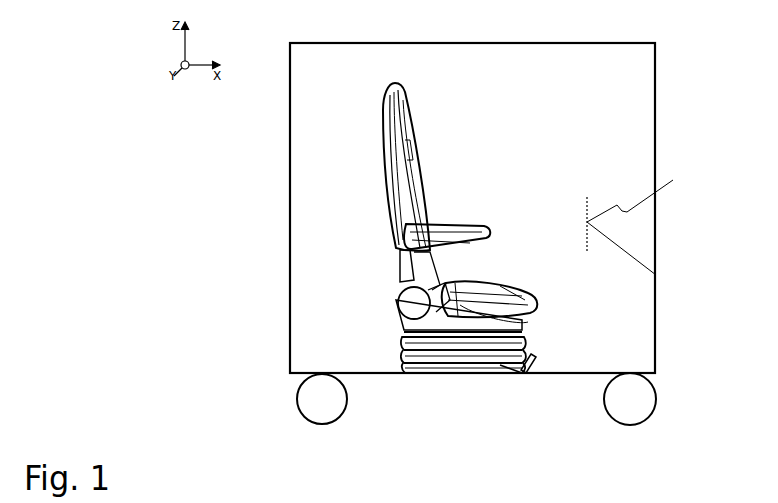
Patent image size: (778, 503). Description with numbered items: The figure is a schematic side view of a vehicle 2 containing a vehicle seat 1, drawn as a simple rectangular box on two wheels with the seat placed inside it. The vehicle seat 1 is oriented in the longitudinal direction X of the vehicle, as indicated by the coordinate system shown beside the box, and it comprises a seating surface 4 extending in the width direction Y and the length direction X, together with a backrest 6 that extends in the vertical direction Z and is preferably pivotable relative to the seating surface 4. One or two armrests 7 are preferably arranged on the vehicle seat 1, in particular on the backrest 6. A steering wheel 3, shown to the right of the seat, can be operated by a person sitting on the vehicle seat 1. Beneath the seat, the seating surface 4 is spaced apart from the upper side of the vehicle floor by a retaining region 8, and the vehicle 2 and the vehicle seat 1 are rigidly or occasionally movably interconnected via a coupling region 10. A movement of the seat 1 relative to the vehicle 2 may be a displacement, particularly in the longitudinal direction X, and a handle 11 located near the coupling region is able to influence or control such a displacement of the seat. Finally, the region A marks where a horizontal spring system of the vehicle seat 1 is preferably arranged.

The vehicle seat 1 is at (364, 237).
The vehicle 2 is at (274, 211).
The steering wheel 3 is at (635, 223).
The seating surface 4 is at (410, 373).
The backrest 6 is at (405, 148).
The armrest 7 is at (553, 138).
The retaining region 8 is at (402, 342).
The coupling region 10 is at (508, 373).
The handle 11 is at (538, 358).
The region of the horizontal spring system A is at (528, 317).